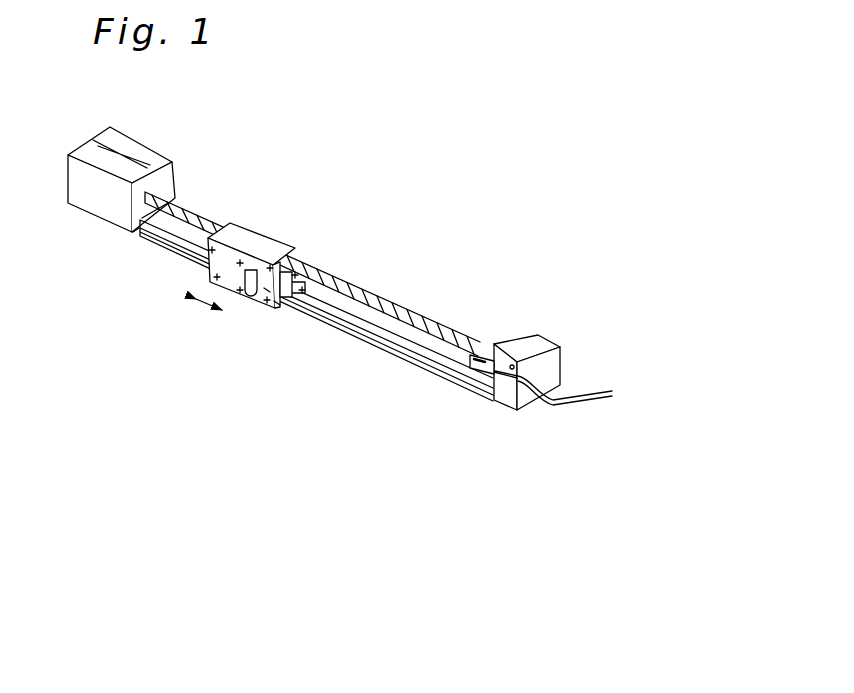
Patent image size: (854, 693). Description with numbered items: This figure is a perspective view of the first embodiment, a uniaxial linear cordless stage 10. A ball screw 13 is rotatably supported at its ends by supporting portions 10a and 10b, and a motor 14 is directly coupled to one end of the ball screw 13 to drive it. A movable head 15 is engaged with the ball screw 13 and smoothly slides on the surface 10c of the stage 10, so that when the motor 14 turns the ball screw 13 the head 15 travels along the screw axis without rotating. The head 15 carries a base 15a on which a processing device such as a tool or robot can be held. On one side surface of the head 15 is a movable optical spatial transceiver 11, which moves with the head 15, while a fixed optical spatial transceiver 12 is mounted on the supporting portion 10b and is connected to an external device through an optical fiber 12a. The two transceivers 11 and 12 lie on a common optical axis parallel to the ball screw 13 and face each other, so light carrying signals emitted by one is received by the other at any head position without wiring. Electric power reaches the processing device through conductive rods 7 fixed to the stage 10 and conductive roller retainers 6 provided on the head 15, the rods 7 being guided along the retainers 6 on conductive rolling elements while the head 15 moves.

The uniaxial linear cordless stage 10 is at (305, 271).
The supporting portion 10a is at (133, 152).
The supporting portion 10b is at (498, 352).
The surface of the stage 10c is at (372, 318).
The ball screw 13 is at (412, 320).
The movable head 15 is at (285, 248).
The base of the head 15a is at (208, 267).
The movable optical spatial transceiver 11 is at (296, 297).
The conductive roller retainers 6 is at (277, 303).
The conductive rods 7 is at (338, 308).
The fixed optical spatial transceiver 12 is at (512, 378).
The optical fiber 12a is at (585, 400).
The motor 14 is at (532, 377).